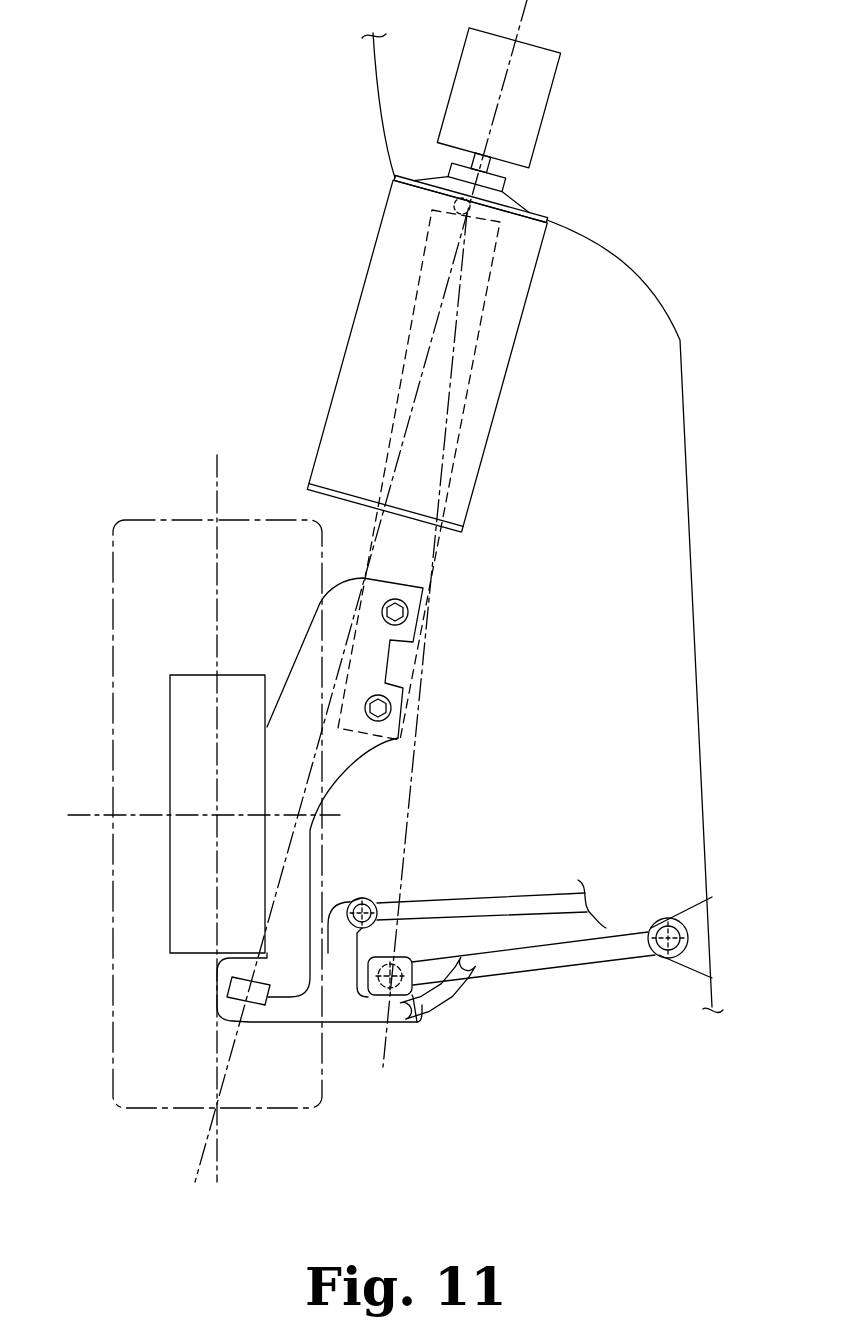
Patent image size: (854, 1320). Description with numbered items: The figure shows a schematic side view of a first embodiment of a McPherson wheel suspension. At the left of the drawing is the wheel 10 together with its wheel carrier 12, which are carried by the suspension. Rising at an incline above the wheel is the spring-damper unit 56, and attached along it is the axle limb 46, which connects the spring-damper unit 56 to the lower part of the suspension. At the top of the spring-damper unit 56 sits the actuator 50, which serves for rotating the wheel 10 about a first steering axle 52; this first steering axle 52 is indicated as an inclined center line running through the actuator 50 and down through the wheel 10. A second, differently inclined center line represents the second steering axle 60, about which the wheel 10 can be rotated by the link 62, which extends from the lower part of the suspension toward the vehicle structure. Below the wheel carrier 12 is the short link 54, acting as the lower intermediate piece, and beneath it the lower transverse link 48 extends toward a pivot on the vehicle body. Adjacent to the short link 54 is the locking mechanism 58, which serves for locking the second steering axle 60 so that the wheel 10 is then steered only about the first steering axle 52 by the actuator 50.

The wheel 10 is at (140, 520).
The wheel carrier 12 is at (187, 730).
The axle limb 46 is at (340, 603).
The lower transverse link 48 is at (563, 955).
The actuator 50 is at (525, 100).
The first steering axle 52 is at (520, 4).
The short link 54 is at (350, 1000).
The spring-damper unit 56 is at (527, 275).
The locking mechanism 58 is at (447, 993).
The second steering axle 60 is at (410, 790).
The link 62 is at (538, 907).